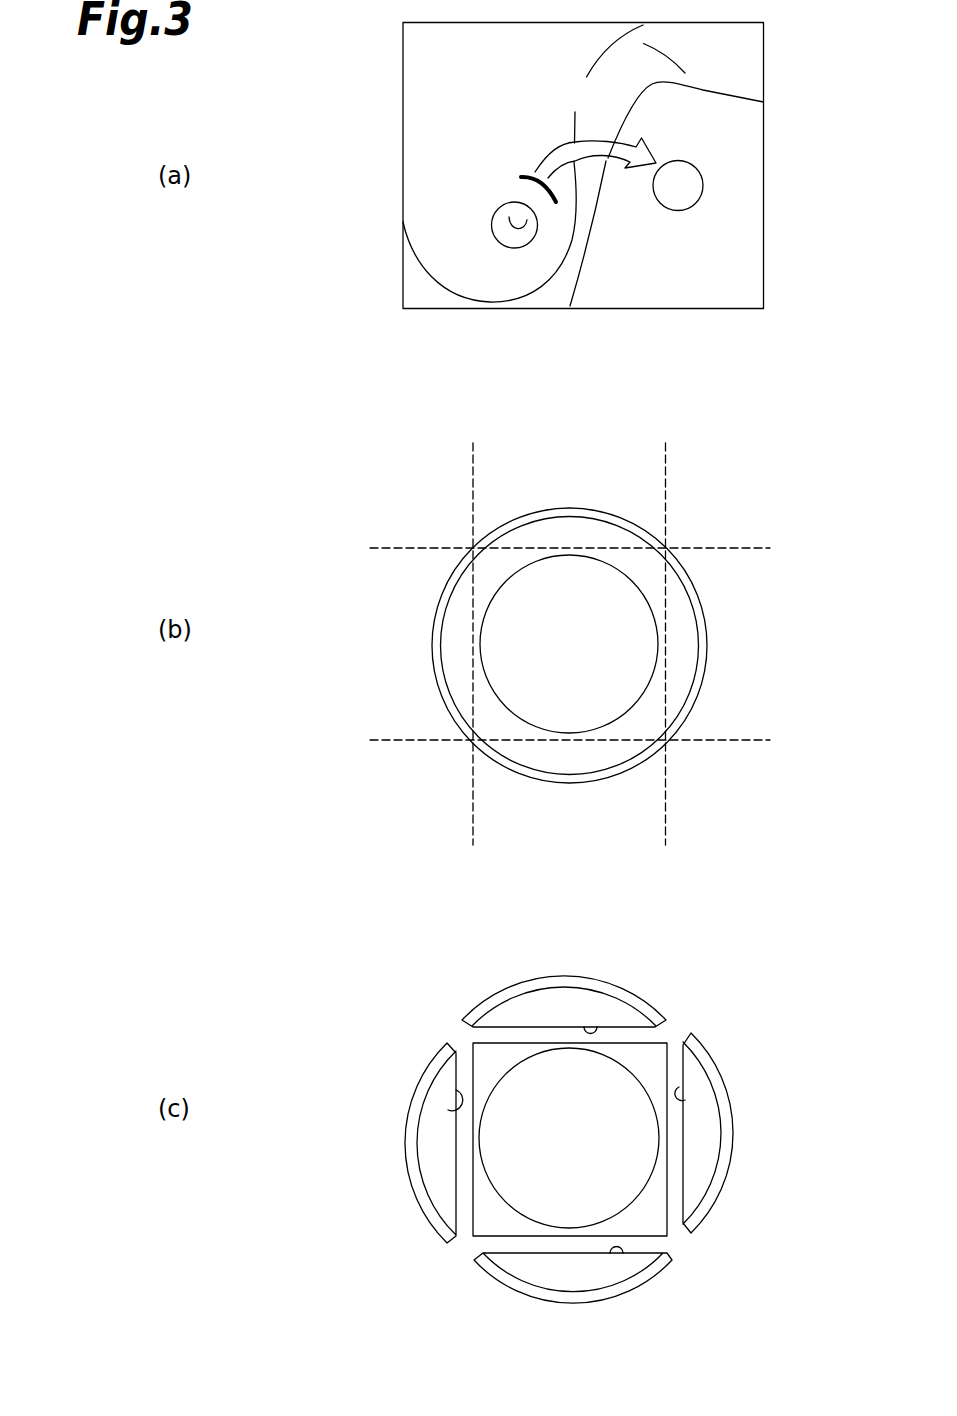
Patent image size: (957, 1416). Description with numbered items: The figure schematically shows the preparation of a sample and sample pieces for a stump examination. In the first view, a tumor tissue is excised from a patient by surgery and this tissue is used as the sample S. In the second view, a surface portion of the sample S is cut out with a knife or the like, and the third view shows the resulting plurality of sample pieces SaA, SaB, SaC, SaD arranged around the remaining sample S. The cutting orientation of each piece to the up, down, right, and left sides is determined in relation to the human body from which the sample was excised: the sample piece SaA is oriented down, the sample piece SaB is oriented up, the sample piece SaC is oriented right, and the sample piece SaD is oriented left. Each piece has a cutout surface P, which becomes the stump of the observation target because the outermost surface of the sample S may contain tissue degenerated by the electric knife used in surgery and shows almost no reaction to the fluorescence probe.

The sample S is at (575, 744).
The sample piece SaA is at (570, 1275).
The sample piece SaB is at (530, 1002).
The sample piece SaC is at (708, 1135).
The sample piece SaD is at (432, 1143).
The cutout surface P is at (597, 1027).